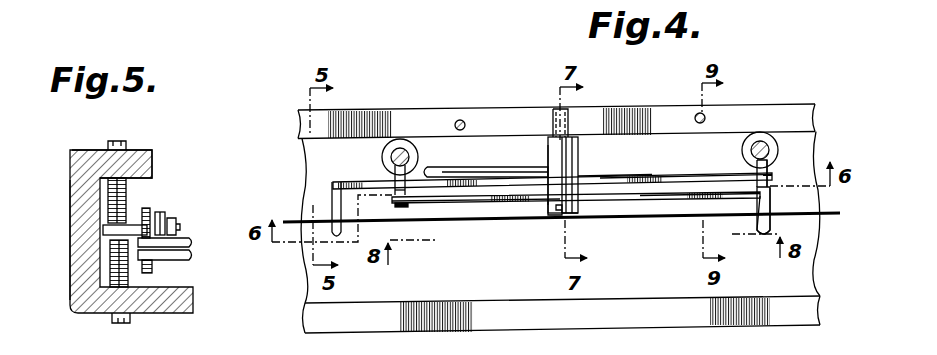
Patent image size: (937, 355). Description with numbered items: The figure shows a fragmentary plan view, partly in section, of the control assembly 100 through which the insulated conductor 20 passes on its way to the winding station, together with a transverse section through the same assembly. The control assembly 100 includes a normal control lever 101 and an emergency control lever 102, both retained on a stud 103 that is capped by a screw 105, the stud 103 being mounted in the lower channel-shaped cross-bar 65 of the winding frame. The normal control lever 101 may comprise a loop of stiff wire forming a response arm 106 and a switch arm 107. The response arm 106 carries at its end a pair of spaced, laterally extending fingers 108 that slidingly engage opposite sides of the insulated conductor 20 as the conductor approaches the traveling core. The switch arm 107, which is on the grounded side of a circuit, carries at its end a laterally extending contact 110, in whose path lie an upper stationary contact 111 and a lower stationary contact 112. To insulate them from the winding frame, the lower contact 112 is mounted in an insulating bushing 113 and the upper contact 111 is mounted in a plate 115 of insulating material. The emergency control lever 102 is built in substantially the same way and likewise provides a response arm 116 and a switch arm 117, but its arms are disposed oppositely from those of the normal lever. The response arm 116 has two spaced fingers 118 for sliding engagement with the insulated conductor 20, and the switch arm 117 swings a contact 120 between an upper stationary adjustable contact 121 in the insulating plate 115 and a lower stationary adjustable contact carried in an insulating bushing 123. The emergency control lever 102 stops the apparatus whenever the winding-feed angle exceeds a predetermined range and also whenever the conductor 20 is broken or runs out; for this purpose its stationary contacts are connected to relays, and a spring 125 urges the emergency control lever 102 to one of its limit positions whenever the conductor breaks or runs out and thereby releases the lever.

In FIG. 4, the insulated conductor 20 is at (827, 215).
In FIG. 5, the lower channel-shaped cross-bar 65 is at (80, 305).
In FIG. 4, the lower channel-shaped cross-bar 65 is at (312, 293).
In FIG. 4, the control assembly 100 is at (535, 150).
In FIG. 5, the normal control lever 101 is at (162, 215).
In FIG. 4, the normal control lever 101 is at (630, 199).
In FIG. 5, the emergency control lever 102 is at (146, 210).
In FIG. 4, the emergency control lever 102 is at (652, 178).
In FIG. 5, the stud 103 is at (75, 238).
In FIG. 4, the stud 103 is at (567, 127).
In FIG. 5, the screw 105 is at (180, 222).
In FIG. 4, the screw 105 is at (547, 213).
In FIG. 4, the response arm 106 is at (683, 199).
In FIG. 4, the switch arm 107 is at (440, 204).
In FIG. 4, the fingers 108 is at (763, 223).
In FIG. 5, the contact 110 is at (108, 228).
In FIG. 4, the contact 110 is at (387, 163).
In FIG. 5, the upper stationary contact 111 is at (112, 193).
In FIG. 4, the upper stationary contact 111 is at (412, 153).
In FIG. 5, the lower stationary contact 112 is at (112, 268).
In FIG. 4, the insulating bushing 113 is at (397, 143).
In FIG. 5, the plate of insulating material 115 is at (147, 150).
In FIG. 4, the response arm 116 is at (355, 185).
In FIG. 4, the switch arm 117 is at (723, 180).
In FIG. 5, the fingers 118 is at (195, 244).
In FIG. 4, the fingers 118 is at (333, 212).
In FIG. 4, the contact 120 is at (770, 165).
In FIG. 4, the upper stationary adjustable contact 121 is at (767, 150).
In FIG. 4, the insulating bushing 123 is at (760, 138).
In FIG. 4, the spring 125 is at (488, 168).